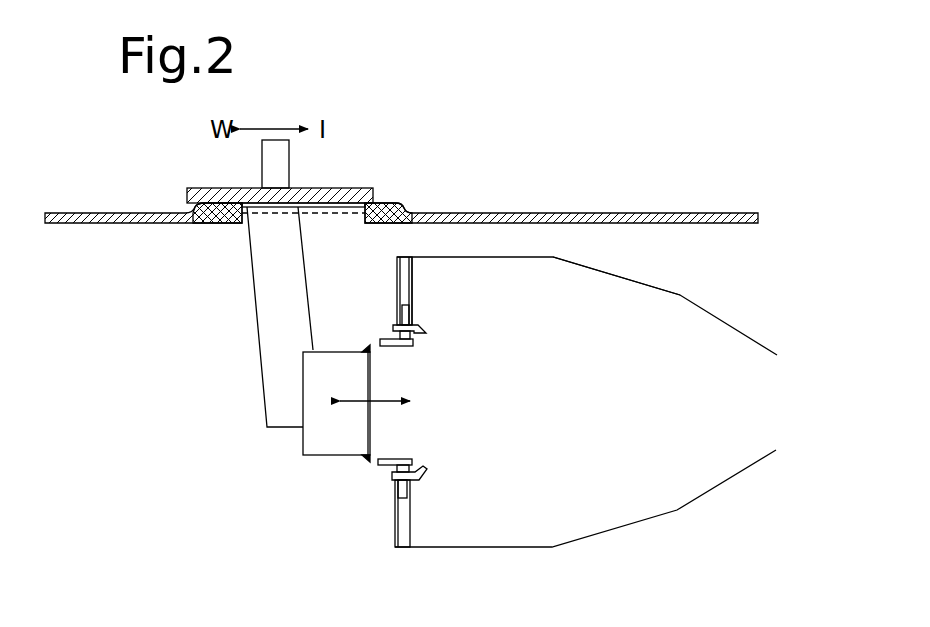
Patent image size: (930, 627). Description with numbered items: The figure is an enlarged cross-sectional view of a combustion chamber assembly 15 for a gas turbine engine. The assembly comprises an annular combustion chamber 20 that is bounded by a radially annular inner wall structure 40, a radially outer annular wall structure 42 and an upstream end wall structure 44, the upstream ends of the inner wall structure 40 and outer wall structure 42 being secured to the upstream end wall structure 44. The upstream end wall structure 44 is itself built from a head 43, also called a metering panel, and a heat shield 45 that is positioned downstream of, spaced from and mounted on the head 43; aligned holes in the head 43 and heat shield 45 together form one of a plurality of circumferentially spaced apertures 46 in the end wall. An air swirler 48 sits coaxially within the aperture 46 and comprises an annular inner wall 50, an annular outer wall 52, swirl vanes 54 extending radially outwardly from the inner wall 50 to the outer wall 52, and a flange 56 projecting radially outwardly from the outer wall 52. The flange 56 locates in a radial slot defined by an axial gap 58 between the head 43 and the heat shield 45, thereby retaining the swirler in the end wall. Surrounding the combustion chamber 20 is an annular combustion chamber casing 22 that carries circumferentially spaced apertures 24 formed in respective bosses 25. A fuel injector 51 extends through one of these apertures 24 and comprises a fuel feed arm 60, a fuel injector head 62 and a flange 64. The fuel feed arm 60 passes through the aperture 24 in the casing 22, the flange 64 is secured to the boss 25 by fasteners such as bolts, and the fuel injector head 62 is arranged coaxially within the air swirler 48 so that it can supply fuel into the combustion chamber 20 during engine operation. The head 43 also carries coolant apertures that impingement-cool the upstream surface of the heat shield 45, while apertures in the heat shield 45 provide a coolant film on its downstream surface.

The combustion chamber assembly 15 is at (419, 185).
The annular combustion chamber 20 is at (624, 275).
The annular combustion chamber casing 22 is at (532, 213).
The aperture 24 is at (313, 217).
The boss 25 is at (394, 205).
The radially annular inner wall structure 40 is at (600, 530).
The radially outer annular wall structure 42 is at (590, 272).
The head 43 is at (397, 271).
The upstream end wall structure 44 is at (416, 303).
The heat shield 45 is at (412, 290).
The aperture 46 is at (404, 443).
The air swirler 48 is at (433, 470).
The annular inner wall 50 is at (402, 346).
The fuel injector 51 is at (278, 342).
The annular outer wall 52 is at (422, 328).
The swirl vanes 54 is at (396, 333).
The flange 56 is at (410, 490).
The axial gap 58 is at (400, 527).
The fuel feed arm 60 is at (266, 282).
The fuel injector head 62 is at (342, 445).
The flange 64 is at (320, 188).